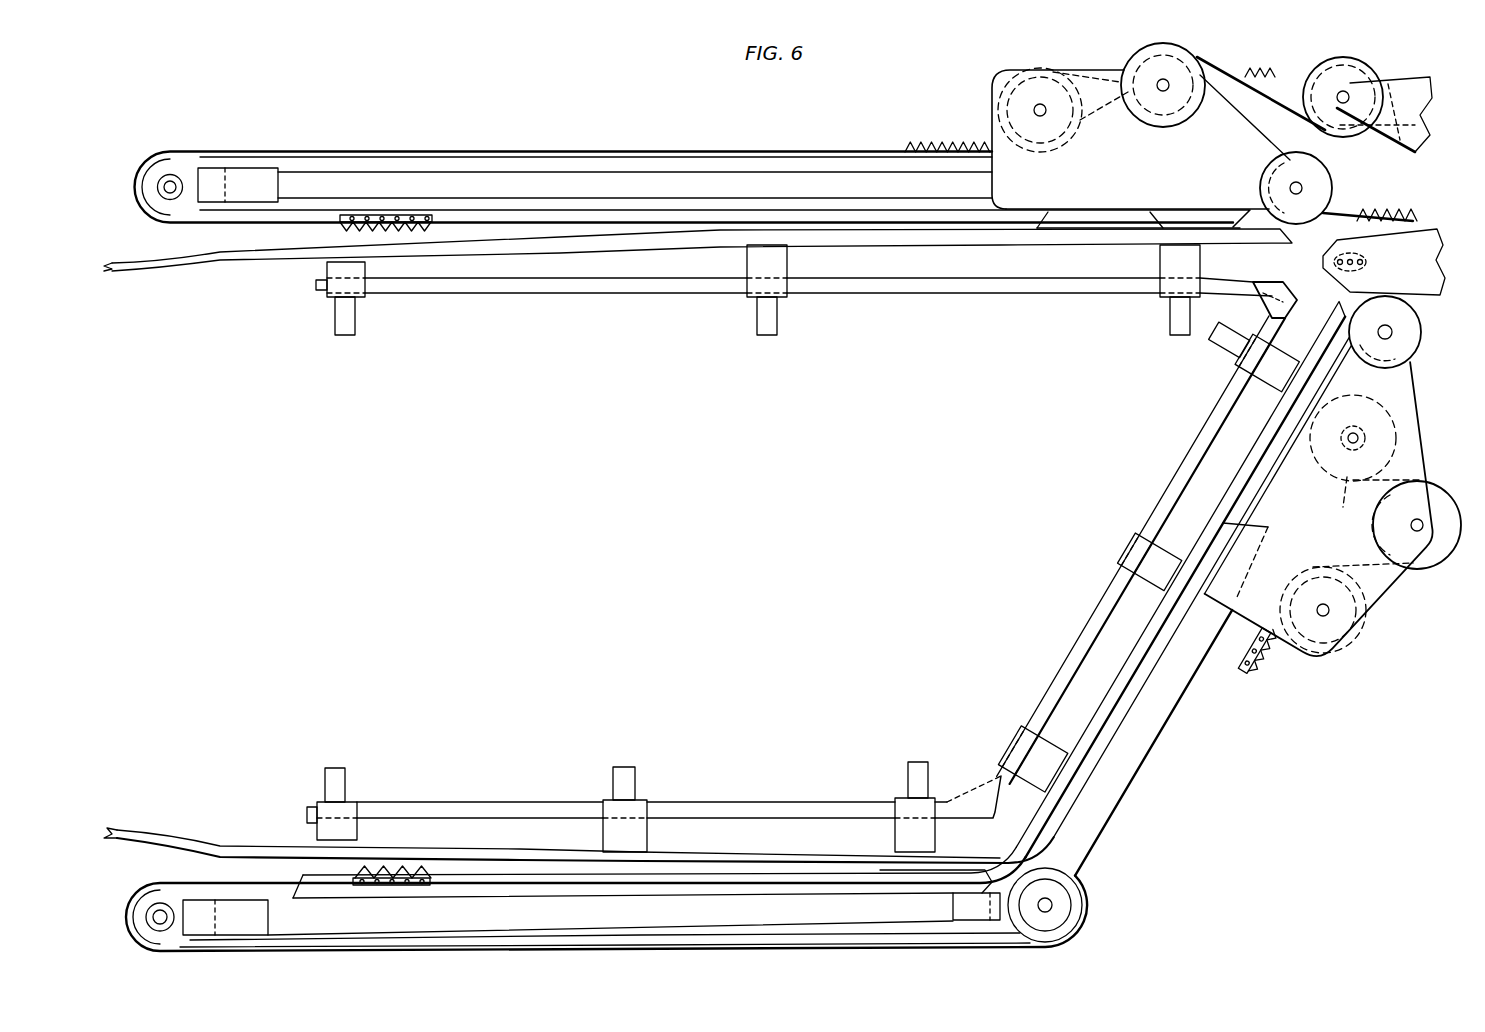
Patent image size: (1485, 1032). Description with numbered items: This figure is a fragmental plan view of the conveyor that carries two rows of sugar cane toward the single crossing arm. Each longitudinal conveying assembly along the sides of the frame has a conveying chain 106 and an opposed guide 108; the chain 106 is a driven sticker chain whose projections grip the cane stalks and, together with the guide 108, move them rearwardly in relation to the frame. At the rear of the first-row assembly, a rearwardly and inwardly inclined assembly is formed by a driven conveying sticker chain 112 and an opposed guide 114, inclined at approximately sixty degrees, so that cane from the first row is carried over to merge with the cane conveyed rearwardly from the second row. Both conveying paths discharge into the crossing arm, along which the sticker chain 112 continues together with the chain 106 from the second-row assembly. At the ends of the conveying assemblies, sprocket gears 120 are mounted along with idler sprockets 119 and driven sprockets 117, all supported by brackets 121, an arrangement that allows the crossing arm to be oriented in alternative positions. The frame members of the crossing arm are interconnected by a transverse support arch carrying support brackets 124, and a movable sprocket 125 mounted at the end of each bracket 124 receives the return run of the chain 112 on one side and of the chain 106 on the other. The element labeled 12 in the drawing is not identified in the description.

The frame plate 12 is at (1432, 242).
The conveying chain 106 is at (345, 219).
The guide 108 is at (246, 249).
The driven conveying sticker chain 112 is at (1265, 658).
The guide 114 is at (1180, 668).
The driven sprockets 117 is at (1053, 80).
The idler sprockets 119 is at (1180, 47).
The sprocket gears 120 is at (1322, 190).
The brackets 121 is at (1170, 165).
The support brackets 124 is at (1400, 85).
The movable sprocket 125 is at (1325, 62).